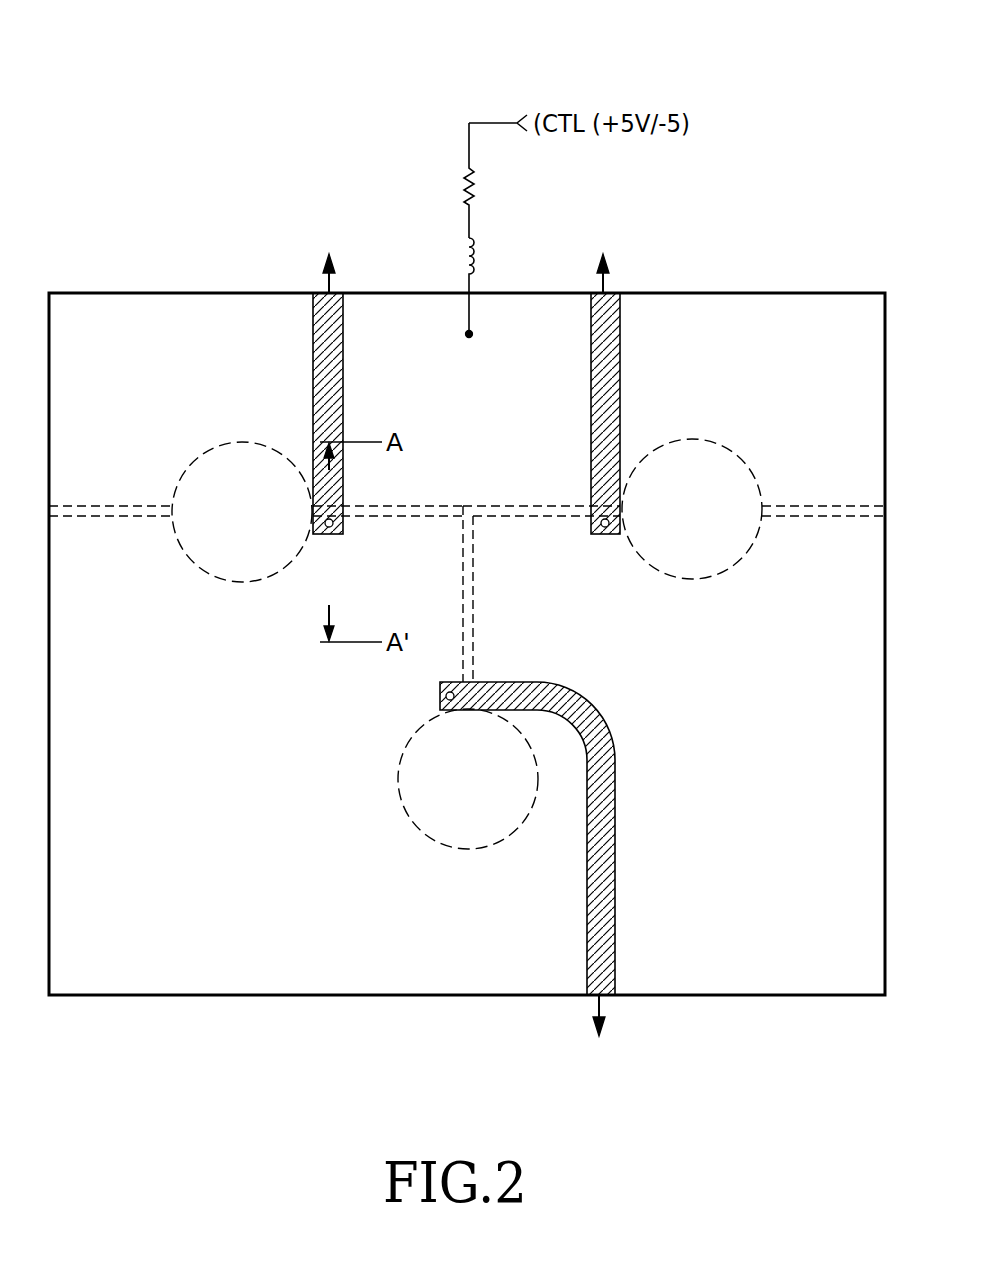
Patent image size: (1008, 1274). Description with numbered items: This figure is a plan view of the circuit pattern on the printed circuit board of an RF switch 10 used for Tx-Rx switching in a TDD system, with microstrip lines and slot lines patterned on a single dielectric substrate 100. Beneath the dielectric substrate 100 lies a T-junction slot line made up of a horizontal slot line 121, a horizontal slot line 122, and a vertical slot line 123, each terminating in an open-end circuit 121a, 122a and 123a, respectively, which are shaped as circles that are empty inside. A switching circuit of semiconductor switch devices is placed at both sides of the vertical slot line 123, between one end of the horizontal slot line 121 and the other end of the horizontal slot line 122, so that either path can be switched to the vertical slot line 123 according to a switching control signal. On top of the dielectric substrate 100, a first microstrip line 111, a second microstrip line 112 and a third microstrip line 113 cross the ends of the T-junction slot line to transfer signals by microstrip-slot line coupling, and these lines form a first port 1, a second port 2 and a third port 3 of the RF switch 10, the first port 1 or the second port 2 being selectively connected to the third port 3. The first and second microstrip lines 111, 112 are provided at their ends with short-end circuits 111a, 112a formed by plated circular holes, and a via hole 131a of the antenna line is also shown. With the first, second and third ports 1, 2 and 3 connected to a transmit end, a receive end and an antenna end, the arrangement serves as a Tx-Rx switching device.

The RF switch 10 is at (174, 72).
The dielectric substrate 100 is at (106, 940).
The first port 1 is at (339, 274).
The second port 2 is at (613, 274).
The third port 3 is at (604, 1014).
The first microstrip line 111 is at (343, 368).
The second microstrip line 112 is at (620, 377).
The third microstrip line 113 is at (615, 855).
The short-end circuit 111a is at (329, 534).
The short-end circuit 112a is at (605, 534).
The via hole of antenna line 131a is at (440, 693).
The horizontal slot line 121 is at (427, 506).
The horizontal slot line 122 is at (527, 506).
The vertical slot line 123 is at (473, 636).
The open-end circuit 121a is at (275, 528).
The open-end circuit 122a is at (666, 526).
The open-end circuit 123a is at (497, 797).